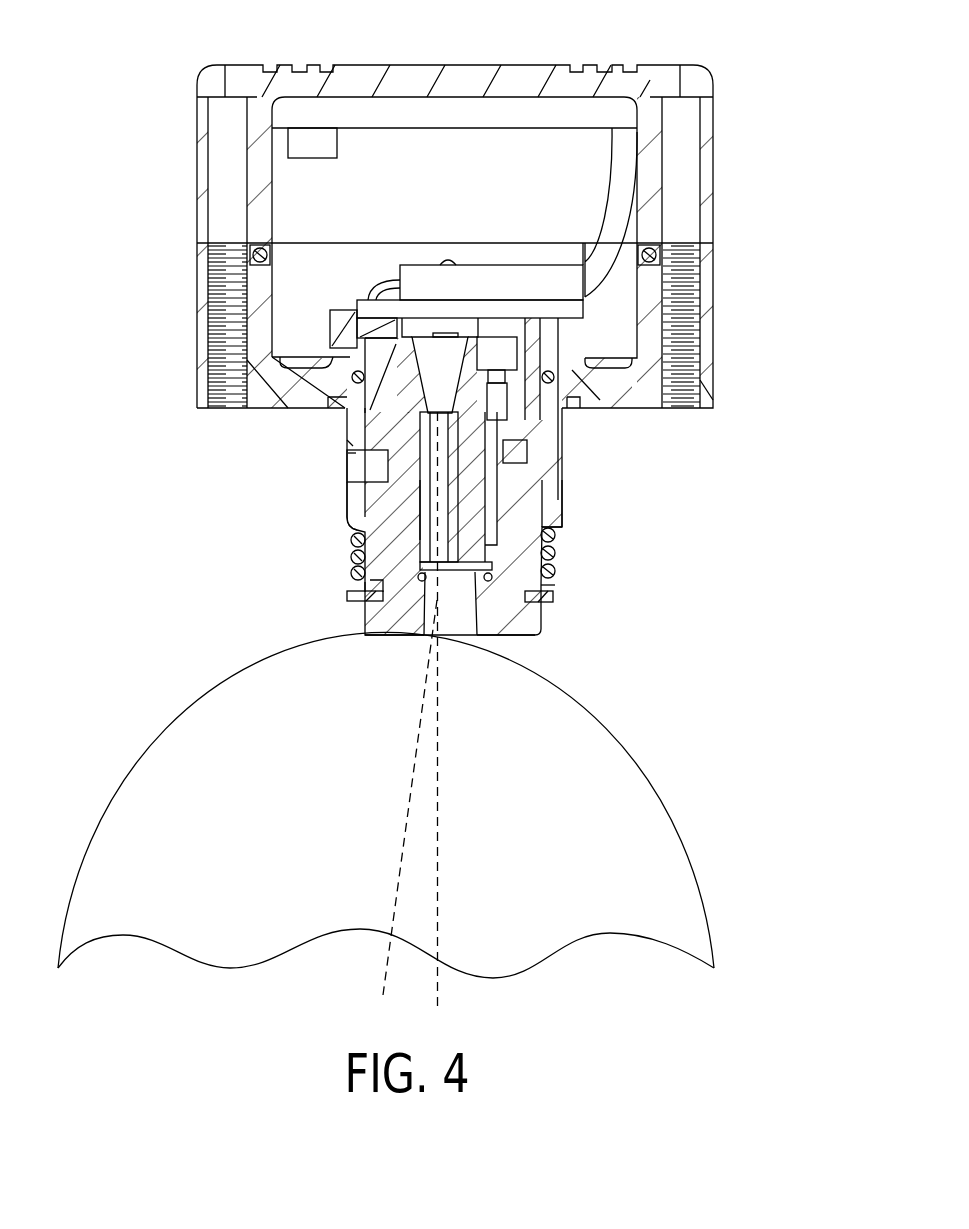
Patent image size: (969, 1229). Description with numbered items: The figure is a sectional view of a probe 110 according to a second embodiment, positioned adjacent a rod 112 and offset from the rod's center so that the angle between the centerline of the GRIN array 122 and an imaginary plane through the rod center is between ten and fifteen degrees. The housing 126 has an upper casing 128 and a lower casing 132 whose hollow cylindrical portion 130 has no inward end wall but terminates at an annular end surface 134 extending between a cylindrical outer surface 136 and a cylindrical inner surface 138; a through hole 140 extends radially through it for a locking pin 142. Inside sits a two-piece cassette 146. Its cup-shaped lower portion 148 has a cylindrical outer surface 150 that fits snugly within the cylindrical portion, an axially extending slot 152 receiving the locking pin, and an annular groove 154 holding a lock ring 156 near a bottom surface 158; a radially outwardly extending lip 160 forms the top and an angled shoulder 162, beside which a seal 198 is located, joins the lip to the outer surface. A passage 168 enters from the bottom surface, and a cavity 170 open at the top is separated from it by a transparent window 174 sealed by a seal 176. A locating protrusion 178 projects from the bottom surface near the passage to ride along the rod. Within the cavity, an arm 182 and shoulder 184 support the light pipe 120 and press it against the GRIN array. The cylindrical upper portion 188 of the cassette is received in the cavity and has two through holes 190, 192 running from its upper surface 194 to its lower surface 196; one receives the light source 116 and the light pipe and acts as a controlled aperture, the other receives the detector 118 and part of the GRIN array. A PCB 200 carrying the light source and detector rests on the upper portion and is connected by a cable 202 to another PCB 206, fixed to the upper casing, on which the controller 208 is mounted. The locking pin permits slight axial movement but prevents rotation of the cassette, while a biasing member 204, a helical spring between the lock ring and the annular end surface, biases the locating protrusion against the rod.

The probe 110 is at (146, 91).
The rod 112 is at (166, 727).
The light source 116 is at (508, 348).
The detector 118 is at (421, 333).
The light pipe 120 is at (503, 391).
The GRIN array 122 is at (364, 548).
The housing 126 is at (158, 148).
The upper casing 128 is at (195, 232).
The hollow cylindrical portion 130 is at (343, 440).
The lower casing 132 is at (716, 308).
The annular end surface 134 is at (350, 532).
The cylindrical outer surface 136 is at (347, 498).
The cylindrical inner surface 138 is at (560, 494).
The through hole 140 is at (352, 457).
The locking pin 142 is at (355, 468).
The two-piece cassette 146 is at (574, 332).
The lower portion 148 is at (374, 622).
The cylindrical outer surface 150 is at (355, 577).
The axially extending slot 152 is at (345, 439).
The annular groove 154 is at (360, 595).
The lock ring 156 is at (556, 598).
The bottom surface 158 is at (487, 639).
The radially outwardly extending lip 160 is at (334, 318).
The angled shoulder 162 is at (333, 358).
The passage 168 is at (462, 646).
The cavity 170 is at (492, 470).
The window 174 is at (555, 547).
The seal 176 is at (380, 625).
The locating protrusion 178 is at (432, 644).
The arm 182 is at (514, 421).
The shoulder 184 is at (548, 544).
The upper portion 188 is at (533, 363).
The through hole 190 is at (702, 393).
The through hole 192 is at (380, 360).
The upper surface 194 is at (463, 316).
The lower surface 196 is at (427, 511).
The seal 198 is at (603, 380).
The PCB 200 is at (508, 316).
The cable 202 is at (440, 278).
The biasing member 204 is at (555, 560).
The PCB 206 is at (414, 112).
The controller 208 is at (305, 145).